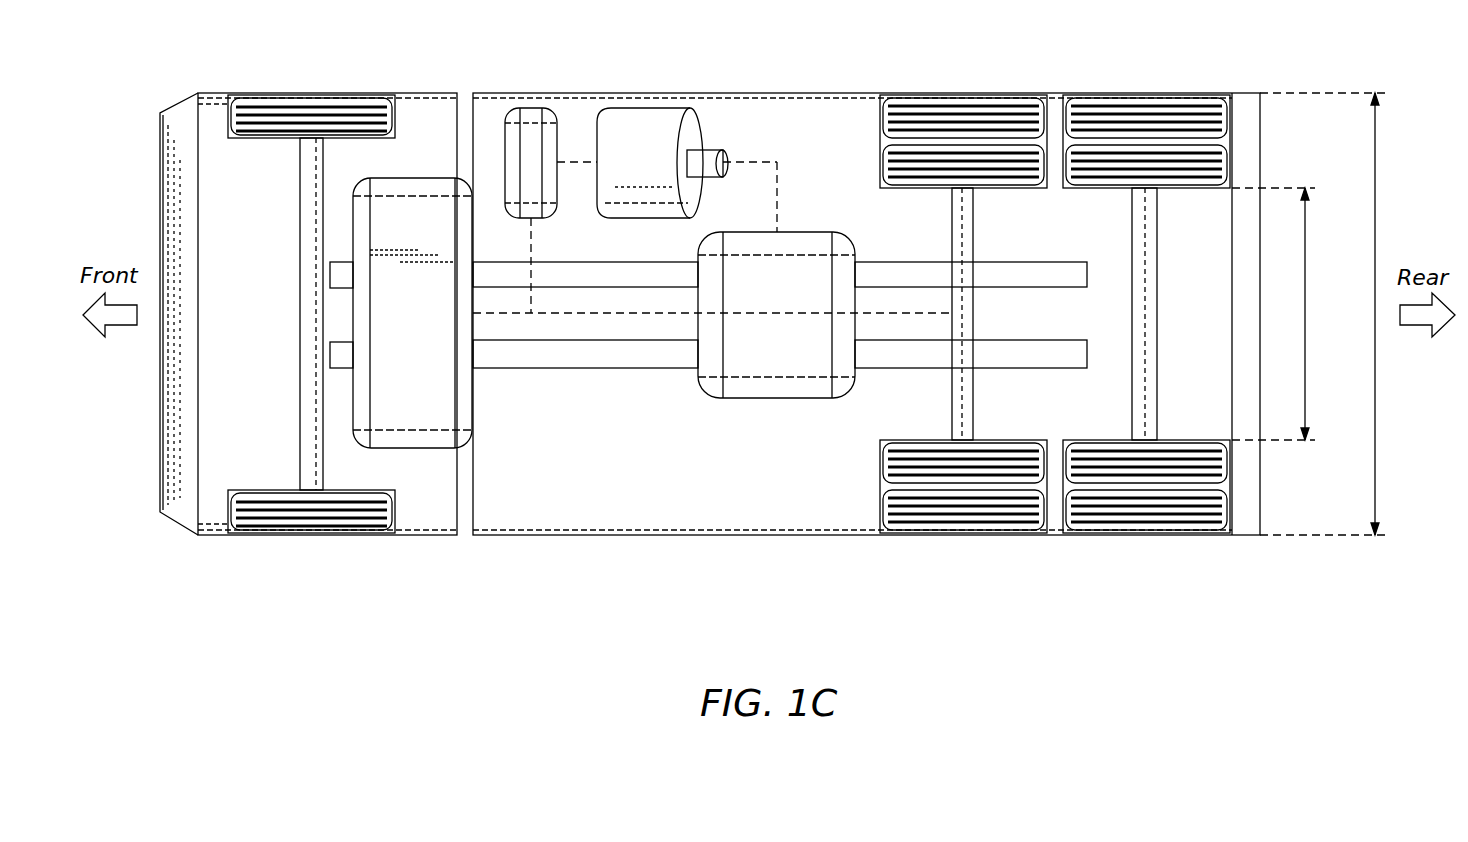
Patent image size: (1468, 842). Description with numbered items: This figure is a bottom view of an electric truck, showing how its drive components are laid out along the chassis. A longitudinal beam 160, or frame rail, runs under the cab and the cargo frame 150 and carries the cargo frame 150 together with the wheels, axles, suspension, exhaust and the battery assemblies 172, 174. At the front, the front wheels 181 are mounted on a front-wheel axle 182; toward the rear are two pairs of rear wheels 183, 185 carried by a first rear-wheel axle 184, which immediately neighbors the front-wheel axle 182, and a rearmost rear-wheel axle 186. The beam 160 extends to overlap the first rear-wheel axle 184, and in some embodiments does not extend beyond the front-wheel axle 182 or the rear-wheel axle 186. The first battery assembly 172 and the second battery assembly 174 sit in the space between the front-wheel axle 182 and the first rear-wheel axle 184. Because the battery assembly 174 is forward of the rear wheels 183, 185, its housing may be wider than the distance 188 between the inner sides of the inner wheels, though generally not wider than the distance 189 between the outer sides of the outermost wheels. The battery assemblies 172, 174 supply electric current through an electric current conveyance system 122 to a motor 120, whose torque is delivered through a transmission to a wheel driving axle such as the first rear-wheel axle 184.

The motor 120 is at (650, 108).
The electric current conveyance system 122 is at (532, 108).
The cargo frame 150 is at (323, 93).
The beam 160 is at (511, 368).
The first battery assembly 172 is at (428, 448).
The second battery assembly 174 is at (765, 398).
The front wheels 181 is at (313, 535).
The front-wheel axle 182 is at (297, 248).
The rear wheels 183 is at (963, 533).
The first rear-wheel axle 184 is at (950, 225).
The rear wheels 185 is at (1147, 533).
The rear-wheel axle 186 is at (1155, 205).
The distance between the inside of the inner wheels 188 is at (1307, 318).
The distance between the outer sides of the outermost wheels 189 is at (1377, 245).